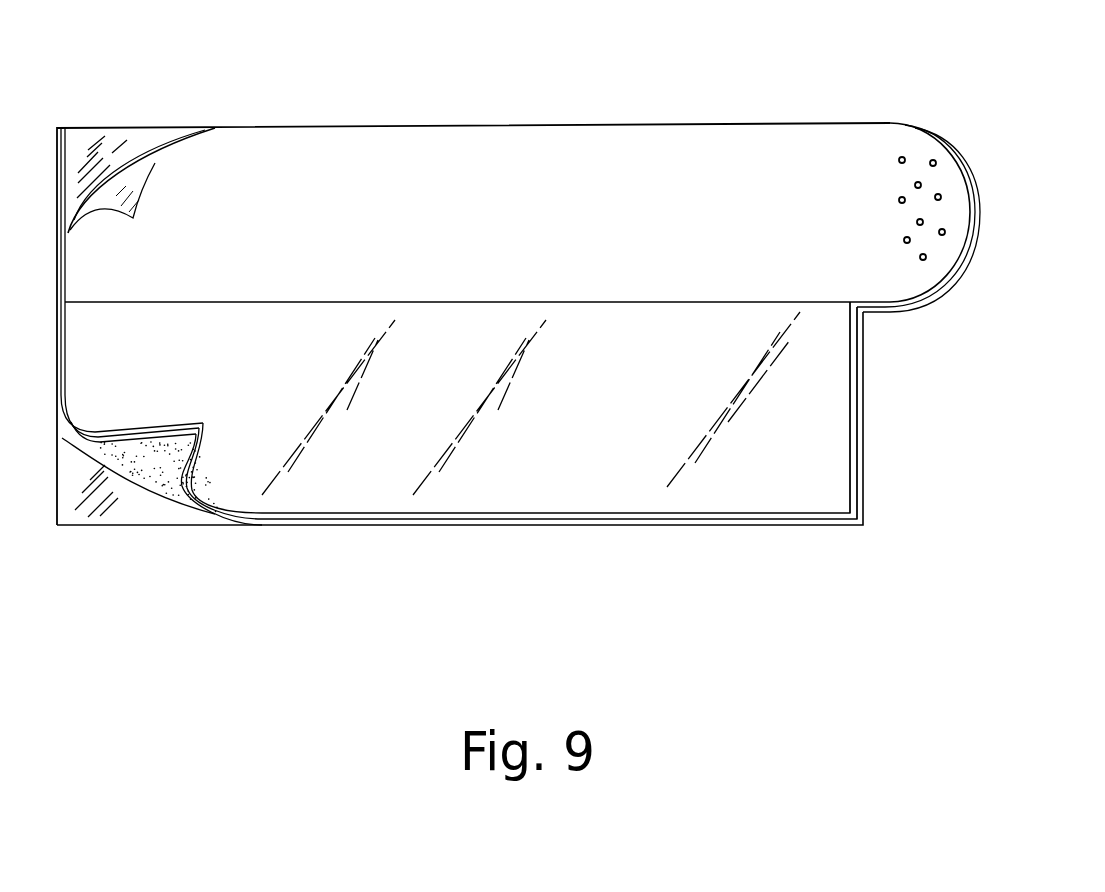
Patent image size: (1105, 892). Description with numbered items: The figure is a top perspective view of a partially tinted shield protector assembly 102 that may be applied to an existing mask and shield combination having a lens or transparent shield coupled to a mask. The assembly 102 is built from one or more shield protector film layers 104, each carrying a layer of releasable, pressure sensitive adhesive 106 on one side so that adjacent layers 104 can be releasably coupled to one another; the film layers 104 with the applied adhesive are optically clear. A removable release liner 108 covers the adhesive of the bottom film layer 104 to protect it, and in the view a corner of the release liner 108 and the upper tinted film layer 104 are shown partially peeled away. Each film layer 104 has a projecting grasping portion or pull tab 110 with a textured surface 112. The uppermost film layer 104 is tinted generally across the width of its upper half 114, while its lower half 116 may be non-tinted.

The partially tinted shield protector assembly 102 is at (925, 468).
The shield protector film layer 104 is at (750, 503).
The releasable pressure sensitive adhesive 106 is at (142, 462).
The removable release liner 108 is at (155, 526).
The pull tab 110 is at (915, 166).
The textured surface 112 is at (942, 231).
The upper half 114 is at (436, 158).
The lower half 116 is at (817, 361).